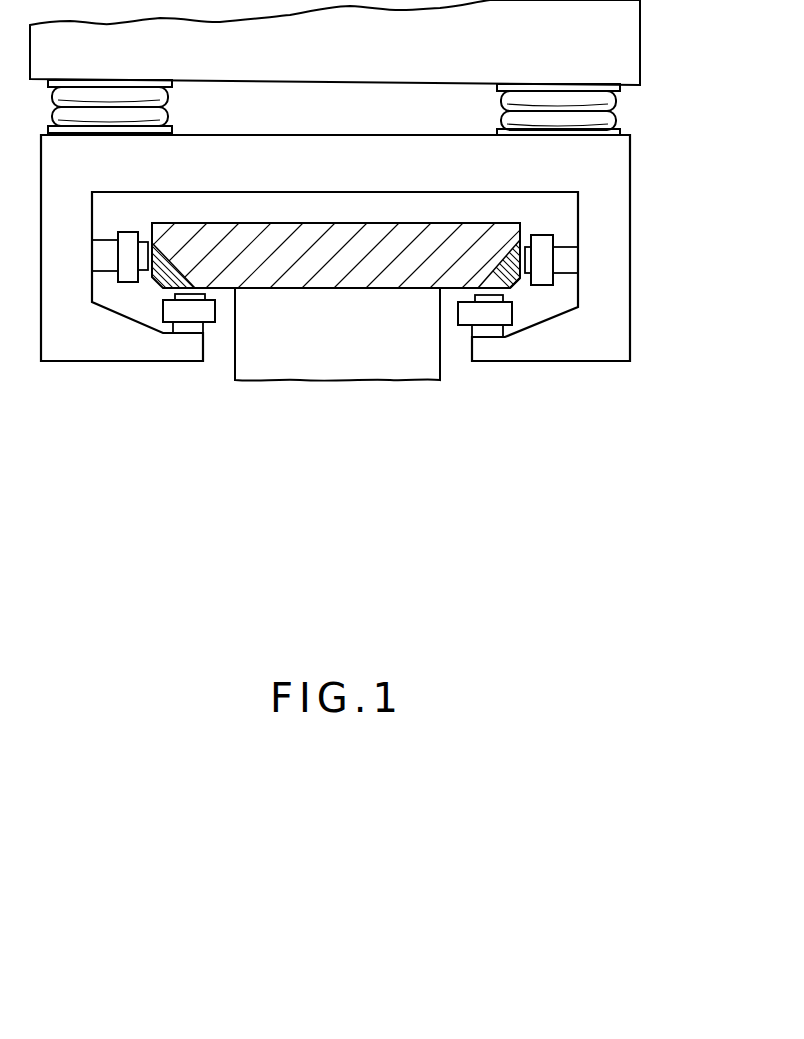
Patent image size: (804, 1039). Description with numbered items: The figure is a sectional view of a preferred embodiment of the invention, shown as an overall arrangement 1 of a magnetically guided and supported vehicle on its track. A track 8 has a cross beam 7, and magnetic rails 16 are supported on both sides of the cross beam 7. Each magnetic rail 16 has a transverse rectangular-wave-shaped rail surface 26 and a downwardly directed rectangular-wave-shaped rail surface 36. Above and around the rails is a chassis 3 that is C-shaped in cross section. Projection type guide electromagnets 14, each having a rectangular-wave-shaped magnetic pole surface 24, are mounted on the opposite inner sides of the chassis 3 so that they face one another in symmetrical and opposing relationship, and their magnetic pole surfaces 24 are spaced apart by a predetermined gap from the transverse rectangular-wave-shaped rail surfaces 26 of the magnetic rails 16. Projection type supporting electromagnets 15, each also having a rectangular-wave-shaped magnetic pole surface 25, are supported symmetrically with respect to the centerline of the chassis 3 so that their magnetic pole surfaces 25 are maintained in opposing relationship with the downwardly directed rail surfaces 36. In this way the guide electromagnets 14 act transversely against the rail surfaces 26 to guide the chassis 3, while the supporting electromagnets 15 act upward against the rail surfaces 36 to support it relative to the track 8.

The vibration isolation apparatus 1 is at (650, 42).
The chassis 3 is at (610, 181).
The cross beam 7 is at (322, 278).
The track 8 is at (283, 366).
The projection type guide electromagnet 14 is at (565, 262).
The projection type supporting electromagnet 15 is at (490, 313).
The magnetic rail 16 is at (513, 290).
The magnetic pole surface 24 is at (500, 289).
The magnetic pole surface 25 is at (473, 296).
The transverse rectangular-wave-shaped rail surface 26 is at (166, 281).
The downwardly directed rectangular-wave-shaped rail surface 36 is at (162, 299).